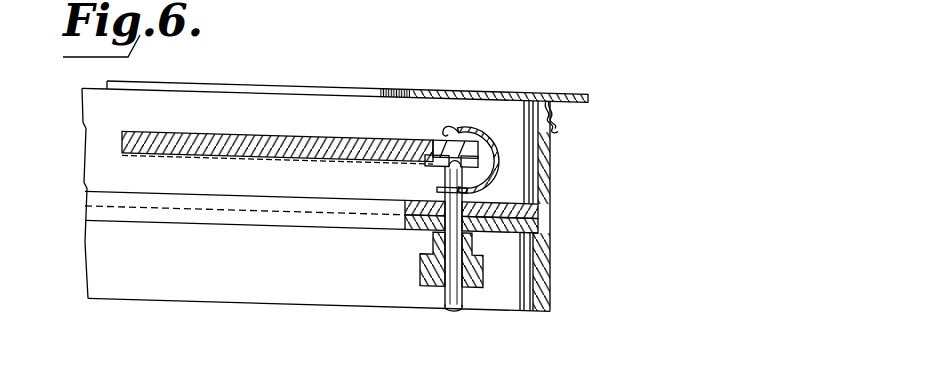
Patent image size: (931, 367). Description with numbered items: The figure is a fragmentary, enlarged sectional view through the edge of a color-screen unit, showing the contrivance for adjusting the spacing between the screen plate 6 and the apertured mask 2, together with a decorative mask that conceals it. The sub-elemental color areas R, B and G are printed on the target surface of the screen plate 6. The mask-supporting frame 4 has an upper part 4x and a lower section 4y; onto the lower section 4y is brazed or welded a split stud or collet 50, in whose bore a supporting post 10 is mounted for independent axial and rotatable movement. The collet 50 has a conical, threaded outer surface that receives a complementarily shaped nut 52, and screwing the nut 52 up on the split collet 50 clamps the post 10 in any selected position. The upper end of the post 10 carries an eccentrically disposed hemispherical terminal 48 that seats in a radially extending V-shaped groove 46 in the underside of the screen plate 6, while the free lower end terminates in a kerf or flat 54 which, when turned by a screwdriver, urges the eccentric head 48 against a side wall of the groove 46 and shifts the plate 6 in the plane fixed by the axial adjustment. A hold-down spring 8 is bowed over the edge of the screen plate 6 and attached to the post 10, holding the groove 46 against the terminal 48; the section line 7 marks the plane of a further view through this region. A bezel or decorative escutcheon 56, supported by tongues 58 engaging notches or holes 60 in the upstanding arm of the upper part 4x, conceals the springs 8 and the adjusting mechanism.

The apertured mask 2 is at (240, 205).
The mask-supporting frame 4 is at (578, 210).
The upper part of the frame 4x is at (552, 158).
The lower section of the frame 4y is at (551, 253).
The screen plate 6 is at (245, 129).
The section line 7- 7 is at (483, 91).
The hold-down springs 8 is at (426, 161).
The supporting posts 10 is at (460, 292).
The V-shaped grooves 46 is at (418, 150).
The hemispherical terminal 48 is at (445, 156).
The split stud or collet 50 is at (420, 220).
The nut 52 is at (483, 258).
The kerf or flat 54 is at (447, 296).
The bezel or decorative escutcheon 56 is at (436, 85).
The tongues 58 is at (558, 99).
The notches or holes 60 is at (551, 86).
The green sub-elemental color area G is at (123, 152).
The blue sub-elemental color area B is at (135, 150).
The red sub-elemental color area R is at (145, 150).